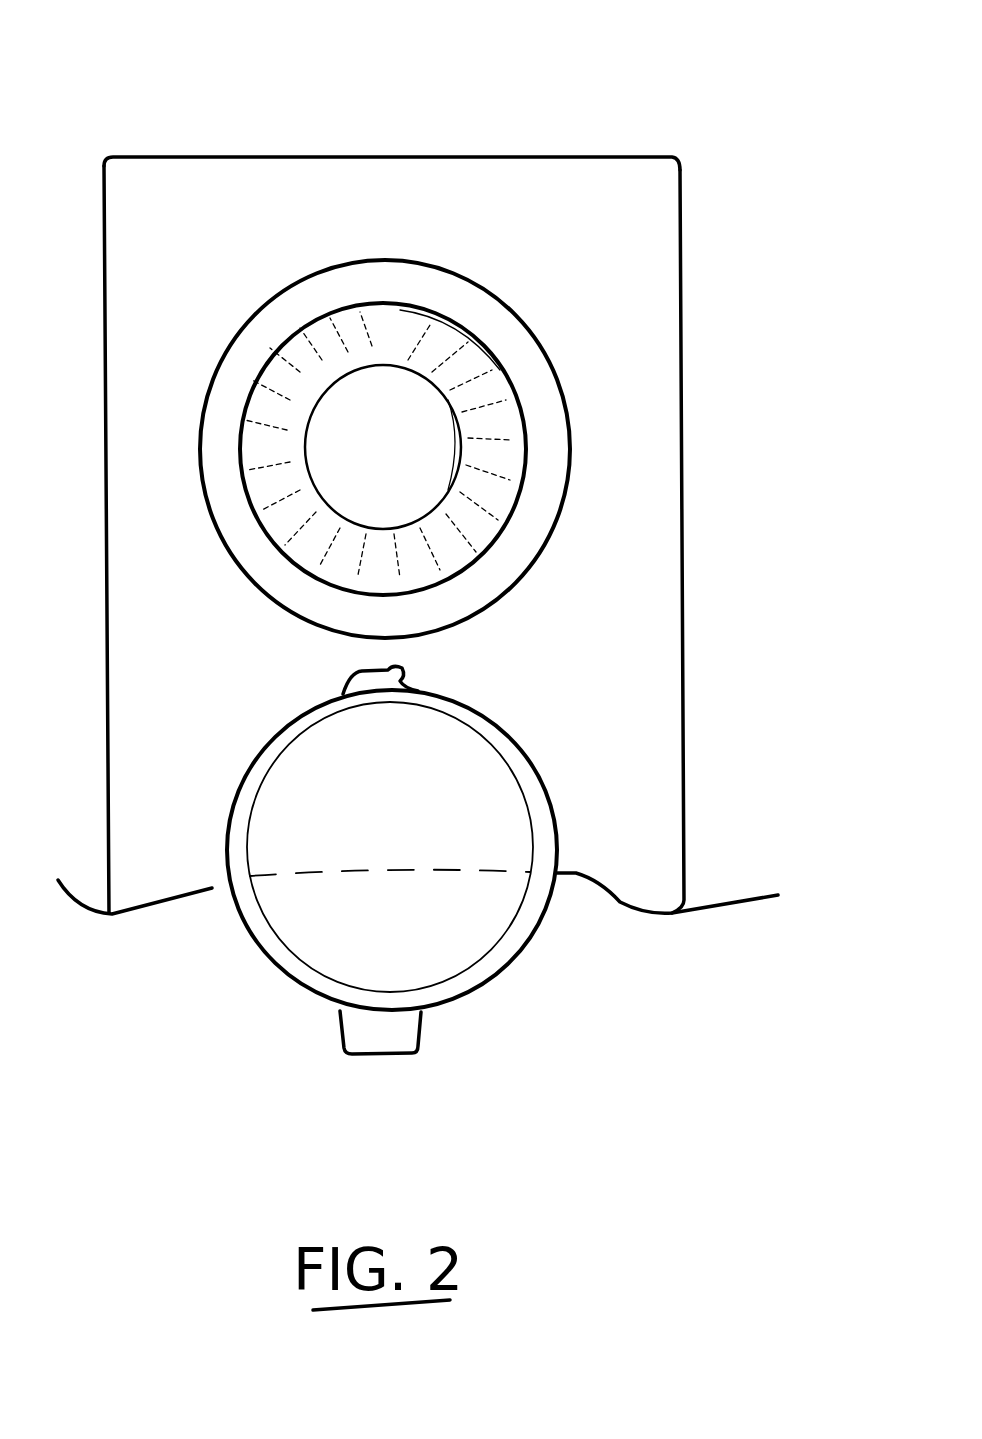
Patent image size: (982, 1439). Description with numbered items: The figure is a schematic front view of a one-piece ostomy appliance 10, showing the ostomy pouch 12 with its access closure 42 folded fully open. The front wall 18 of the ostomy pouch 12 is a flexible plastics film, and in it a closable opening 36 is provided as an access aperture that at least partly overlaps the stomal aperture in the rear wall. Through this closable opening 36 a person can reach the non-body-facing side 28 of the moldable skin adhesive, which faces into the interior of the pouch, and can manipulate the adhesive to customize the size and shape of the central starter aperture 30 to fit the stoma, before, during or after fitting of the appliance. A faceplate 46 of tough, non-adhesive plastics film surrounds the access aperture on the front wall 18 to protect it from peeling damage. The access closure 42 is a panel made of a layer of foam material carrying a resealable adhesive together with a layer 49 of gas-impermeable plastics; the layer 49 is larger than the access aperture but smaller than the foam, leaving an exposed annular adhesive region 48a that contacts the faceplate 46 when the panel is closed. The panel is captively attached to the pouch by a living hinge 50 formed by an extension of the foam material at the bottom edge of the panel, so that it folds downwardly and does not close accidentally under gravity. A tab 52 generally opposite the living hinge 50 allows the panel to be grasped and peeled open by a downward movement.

The one-piece ostomy appliance 10 is at (634, 92).
The ostomy pouch 12 is at (490, 152).
The front wall 18 is at (654, 578).
The non-body-facing side 28 is at (275, 418).
The central starter aperture 30 is at (370, 436).
The closable opening 36 is at (513, 381).
The faceplate 46 is at (452, 293).
The access closure 42 is at (521, 952).
The peripheral circumferential region of foam material 48a is at (545, 836).
The layer of gas impermeable plastics 49 is at (472, 768).
The living hinge 50 is at (385, 672).
The tab 52 is at (380, 1043).